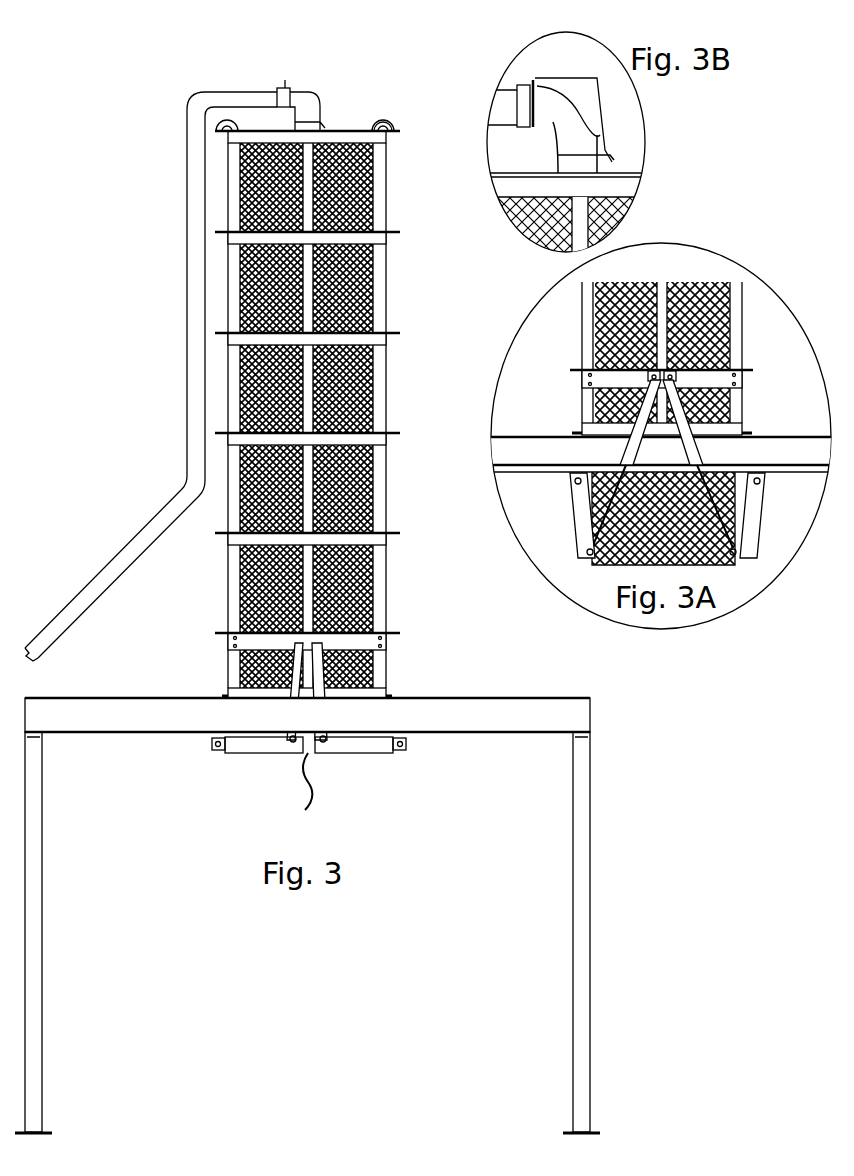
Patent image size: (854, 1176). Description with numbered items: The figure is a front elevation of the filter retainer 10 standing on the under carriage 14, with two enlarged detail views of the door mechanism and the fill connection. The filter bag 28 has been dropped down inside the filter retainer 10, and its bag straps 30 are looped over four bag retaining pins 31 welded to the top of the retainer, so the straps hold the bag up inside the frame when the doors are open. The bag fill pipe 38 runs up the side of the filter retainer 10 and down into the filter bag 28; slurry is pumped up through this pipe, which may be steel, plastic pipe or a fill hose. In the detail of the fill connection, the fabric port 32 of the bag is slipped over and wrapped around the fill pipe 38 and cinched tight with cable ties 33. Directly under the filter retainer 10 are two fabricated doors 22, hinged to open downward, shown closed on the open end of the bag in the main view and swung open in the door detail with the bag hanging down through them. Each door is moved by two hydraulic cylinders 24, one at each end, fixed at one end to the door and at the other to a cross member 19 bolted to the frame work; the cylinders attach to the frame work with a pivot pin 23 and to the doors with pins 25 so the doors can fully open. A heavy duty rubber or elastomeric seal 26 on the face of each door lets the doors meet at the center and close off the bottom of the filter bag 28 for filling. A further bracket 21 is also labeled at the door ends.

In FIG. 3, the filter retainer 10 is at (405, 103).
In FIG. 3, the under carriage 14 is at (585, 687).
In FIG. 3A, the cross member 19 is at (722, 380).
In FIG. 3, the cylinder mounting bracket 21 is at (398, 748).
In FIG. 3, the doors 22 is at (355, 745).
In FIG. 3A, the doors 22 is at (750, 513).
In FIG. 3, the pivot pin 23 is at (320, 643).
In FIG. 3A, the pivot pin 23 is at (672, 372).
In FIG. 3, the hydraulic cylinders 24 is at (318, 697).
In FIG. 3A, the hydraulic cylinders 24 is at (700, 440).
In FIG. 3A, the pins 25 is at (740, 552).
In FIG. 3, the elastomeric seal 26 is at (313, 750).
In FIG. 3A, the elastomeric seal 26 is at (738, 565).
In FIG. 3, the filter bag 28 is at (265, 205).
In FIG. 3, the bag straps 30 is at (387, 117).
In FIG. 3, the bag retaining pin 31 is at (388, 117).
In FIG. 3B, the fabric port 32 is at (553, 123).
In FIG. 3B, the cable ties 33 is at (600, 80).
In FIG. 3, the bag fill pipe 38 is at (192, 393).